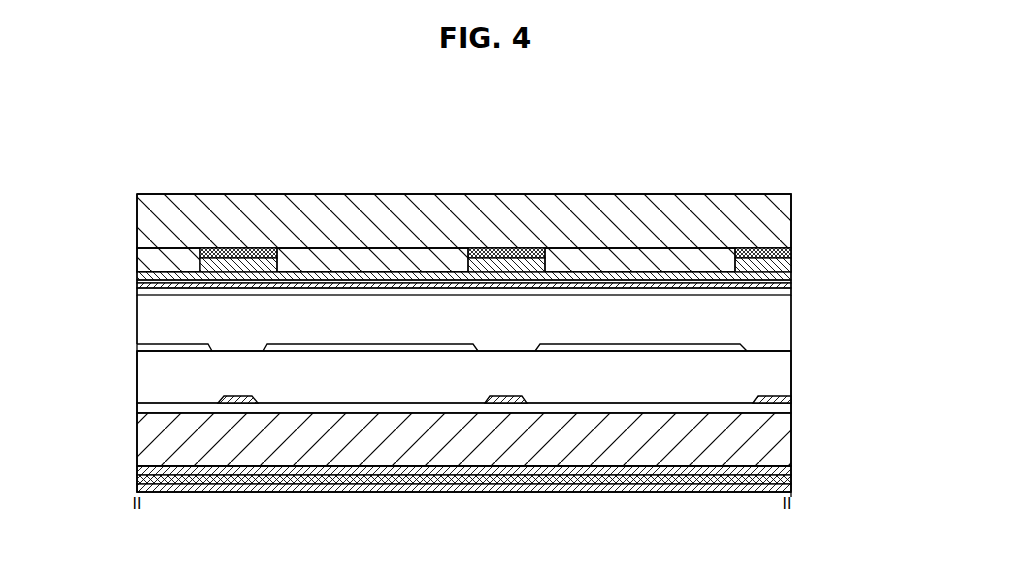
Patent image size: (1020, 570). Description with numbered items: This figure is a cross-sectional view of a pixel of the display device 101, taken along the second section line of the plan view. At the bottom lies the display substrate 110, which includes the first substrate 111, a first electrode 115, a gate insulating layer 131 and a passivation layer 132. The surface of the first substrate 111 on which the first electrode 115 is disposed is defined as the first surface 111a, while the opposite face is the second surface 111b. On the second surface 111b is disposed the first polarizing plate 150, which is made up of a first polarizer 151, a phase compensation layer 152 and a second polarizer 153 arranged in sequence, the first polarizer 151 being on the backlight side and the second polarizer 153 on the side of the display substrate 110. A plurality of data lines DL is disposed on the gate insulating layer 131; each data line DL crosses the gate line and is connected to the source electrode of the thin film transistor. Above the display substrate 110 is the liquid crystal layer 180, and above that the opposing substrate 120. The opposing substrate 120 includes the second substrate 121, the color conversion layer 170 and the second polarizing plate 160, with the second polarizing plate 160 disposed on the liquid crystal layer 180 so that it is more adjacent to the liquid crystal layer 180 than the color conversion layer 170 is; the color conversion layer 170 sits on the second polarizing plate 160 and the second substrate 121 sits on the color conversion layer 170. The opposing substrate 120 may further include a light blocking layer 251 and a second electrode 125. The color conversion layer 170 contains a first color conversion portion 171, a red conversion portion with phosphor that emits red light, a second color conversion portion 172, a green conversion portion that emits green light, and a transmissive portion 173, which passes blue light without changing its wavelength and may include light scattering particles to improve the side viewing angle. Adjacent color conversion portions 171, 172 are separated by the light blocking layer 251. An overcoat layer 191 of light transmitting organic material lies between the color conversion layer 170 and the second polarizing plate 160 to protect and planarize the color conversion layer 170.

The display device 101 is at (200, 152).
The display substrate 110 is at (798, 352).
The first substrate 111 is at (143, 438).
The first surface 111a is at (376, 410).
The second surface 111b is at (375, 466).
The first electrode 115 is at (137, 349).
The opposing substrate 120 is at (800, 195).
The second substrate 121 is at (430, 222).
The second electrode 125 is at (137, 290).
The gate insulating layer 131 is at (137, 408).
The passivation layer 132 is at (145, 380).
The first polarizing plate 150 is at (844, 458).
The first polarizer 151 is at (791, 488).
The phase compensation layer 152 is at (791, 478).
The second polarizer 153 is at (791, 468).
The second polarizing plate 160 is at (137, 283).
The color conversion layer 170 is at (128, 254).
The first color conversion portion 171 is at (378, 258).
The second color conversion portion 172 is at (640, 258).
The transmissive portion 173 is at (163, 247).
The liquid crystal layer 180 is at (145, 325).
The overcoat layer 191 is at (137, 279).
The light blocking layer 251 is at (235, 247).
The data line DL is at (238, 398).